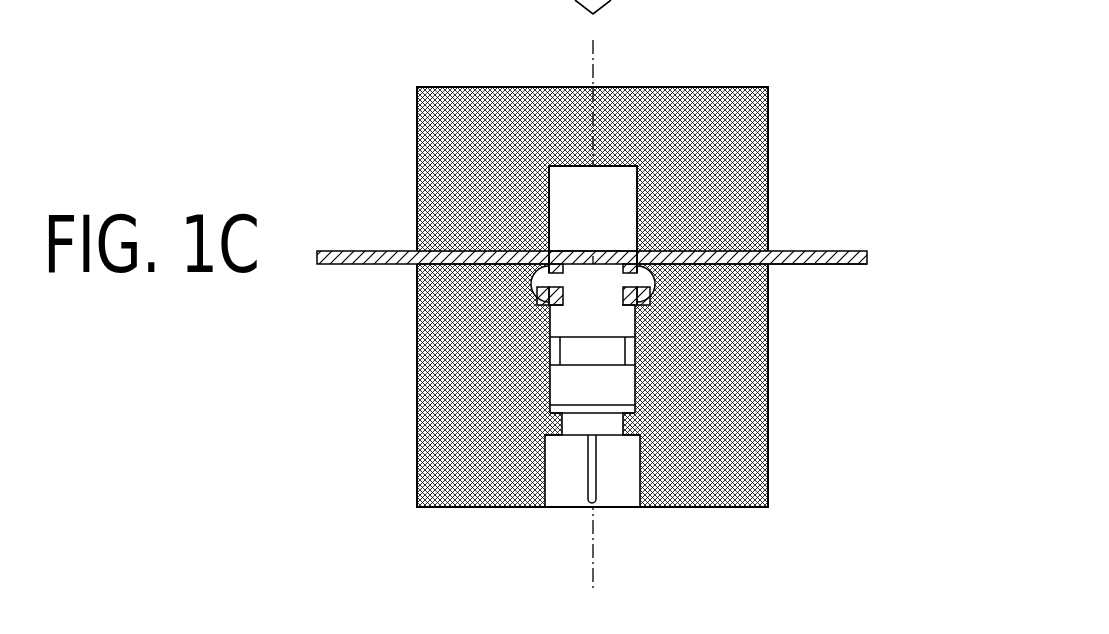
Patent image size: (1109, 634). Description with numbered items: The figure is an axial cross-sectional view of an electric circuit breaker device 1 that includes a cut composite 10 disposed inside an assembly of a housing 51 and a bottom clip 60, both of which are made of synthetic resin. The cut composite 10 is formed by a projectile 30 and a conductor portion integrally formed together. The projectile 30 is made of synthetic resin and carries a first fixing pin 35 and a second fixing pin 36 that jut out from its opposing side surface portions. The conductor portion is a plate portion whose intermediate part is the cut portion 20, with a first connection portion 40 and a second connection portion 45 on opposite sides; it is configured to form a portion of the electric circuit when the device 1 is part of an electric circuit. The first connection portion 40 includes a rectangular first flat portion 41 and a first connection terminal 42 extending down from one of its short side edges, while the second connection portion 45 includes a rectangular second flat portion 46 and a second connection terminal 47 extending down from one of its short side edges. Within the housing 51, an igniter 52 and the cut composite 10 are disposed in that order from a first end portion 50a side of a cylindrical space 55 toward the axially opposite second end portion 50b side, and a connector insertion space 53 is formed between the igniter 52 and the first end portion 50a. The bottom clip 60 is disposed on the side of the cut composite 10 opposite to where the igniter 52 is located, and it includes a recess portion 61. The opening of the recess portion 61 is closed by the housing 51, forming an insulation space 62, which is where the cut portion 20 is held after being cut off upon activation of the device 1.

The electric circuit breaker device 1 is at (488, 77).
The cut composite 10 is at (660, 313).
The cut portion 20 is at (607, 250).
The projectile 30 is at (565, 317).
The first fixing pin 35 is at (547, 277).
The second fixing pin 36 is at (653, 281).
The first connection portion 40 is at (298, 328).
The first flat portion 41 is at (353, 264).
The first connection terminal 42 is at (537, 297).
The second connection portion 45 is at (922, 292).
The second flat portion 46 is at (827, 266).
The second connection terminal 47 is at (650, 303).
The first end portion 50a is at (657, 507).
The second end portion 50b is at (447, 243).
The housing 51 is at (417, 473).
The igniter 52 is at (617, 392).
The connector insertion space 53 is at (545, 482).
The cylindrical space 55 is at (555, 352).
The bottom clip 60 is at (418, 116).
The recess portion 61 is at (593, 215).
The insulation space 62 is at (618, 208).